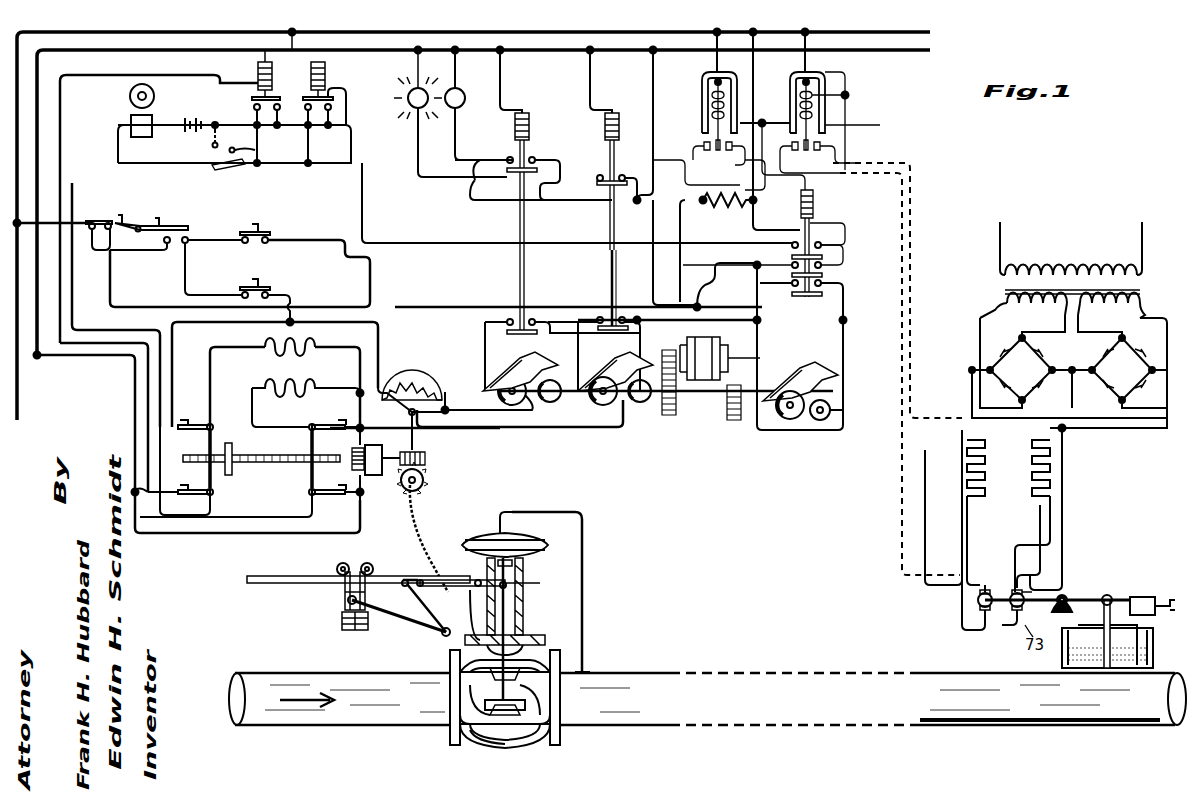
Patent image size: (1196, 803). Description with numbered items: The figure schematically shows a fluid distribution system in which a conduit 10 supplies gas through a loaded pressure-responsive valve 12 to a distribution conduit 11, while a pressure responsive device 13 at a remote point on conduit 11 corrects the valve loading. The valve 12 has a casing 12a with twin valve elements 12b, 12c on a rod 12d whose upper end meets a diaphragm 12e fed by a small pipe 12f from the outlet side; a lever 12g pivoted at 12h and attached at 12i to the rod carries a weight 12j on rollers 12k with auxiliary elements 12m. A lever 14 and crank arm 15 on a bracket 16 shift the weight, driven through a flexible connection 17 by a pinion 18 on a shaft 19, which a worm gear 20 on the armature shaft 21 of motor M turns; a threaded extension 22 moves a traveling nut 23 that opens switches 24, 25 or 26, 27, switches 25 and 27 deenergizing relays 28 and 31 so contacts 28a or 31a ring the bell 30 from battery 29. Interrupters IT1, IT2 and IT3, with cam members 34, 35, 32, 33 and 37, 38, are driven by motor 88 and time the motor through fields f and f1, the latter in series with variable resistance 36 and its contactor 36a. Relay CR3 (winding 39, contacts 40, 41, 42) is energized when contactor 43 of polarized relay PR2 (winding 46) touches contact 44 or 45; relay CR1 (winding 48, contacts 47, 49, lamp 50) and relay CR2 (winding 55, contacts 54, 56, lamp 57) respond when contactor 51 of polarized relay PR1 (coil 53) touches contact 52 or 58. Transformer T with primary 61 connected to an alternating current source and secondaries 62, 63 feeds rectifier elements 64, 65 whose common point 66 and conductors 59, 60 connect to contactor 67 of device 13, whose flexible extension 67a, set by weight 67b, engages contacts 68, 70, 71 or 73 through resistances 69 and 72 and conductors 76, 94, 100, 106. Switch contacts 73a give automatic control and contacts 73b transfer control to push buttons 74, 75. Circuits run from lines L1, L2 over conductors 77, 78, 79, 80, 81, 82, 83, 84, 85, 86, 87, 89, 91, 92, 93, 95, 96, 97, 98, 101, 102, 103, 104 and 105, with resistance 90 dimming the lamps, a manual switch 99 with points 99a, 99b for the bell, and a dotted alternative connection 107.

The conduit 10 is at (258, 668).
The distribution conduit 11 is at (620, 668).
The loaded pressure-responsive valve mechanism 12 is at (545, 640).
The casing 12a is at (530, 750).
The valve element 12b is at (486, 695).
The valve element 12c is at (538, 693).
The rod 12d is at (525, 608).
The diaphragm 12e is at (488, 535).
The small pipe 12f is at (584, 560).
The lever 12g is at (290, 572).
The pivot 12h is at (475, 618).
The pivotal attachment 12i is at (515, 578).
The weight 12j is at (332, 598).
The rollers 12k is at (373, 552).
The auxiliary elements 12m is at (340, 620).
The pressure responsive device 13 is at (1155, 645).
The lever 14 is at (387, 608).
The lever or crank arm 15 is at (427, 603).
The bracket 16 is at (413, 572).
The flexible connection 17 is at (425, 520).
The pinion 18 is at (430, 488).
The shaft 19 is at (420, 440).
The worm gear 20 is at (428, 460).
The armature shaft 21 is at (385, 448).
The threaded extension 22 is at (267, 443).
The traveling nut 23 is at (235, 448).
The switch 24 is at (330, 420).
The switch 25 is at (325, 500).
The switch 26 is at (193, 420).
The switch 27 is at (195, 485).
The relay 28 is at (256, 72).
The contacts 28a is at (250, 102).
The battery 29 is at (200, 112).
The electric bell-ringer 30 is at (150, 92).
The relay 31 is at (328, 72).
The contacts 31a is at (336, 105).
The adjustable cam member 32 is at (645, 408).
The adjustable cam member 33 is at (600, 410).
The adjustable cam member 34 is at (553, 405).
The adjustable cam member 35 is at (475, 396).
The variable resistance 36 is at (430, 372).
The short-circuiting contactor 36a is at (392, 405).
The cam member 37 is at (846, 410).
The cam member 38 is at (790, 420).
The operating winding 39 is at (769, 197).
The contacts 40 is at (822, 290).
The contacts 41 is at (822, 270).
The contacts 42 is at (822, 250).
The contactor 43 is at (845, 128).
The contact 44 is at (840, 150).
The contact 45 is at (770, 118).
The operating winding 46 is at (847, 98).
The contacts 47 is at (549, 324).
The operating winding 48 is at (530, 120).
The contacts 49 is at (503, 170).
The signal lamp 50 is at (462, 90).
The contactor 51 is at (738, 170).
The left hand contact 52 is at (700, 148).
The operating coil 53 is at (710, 110).
The contacts 54 is at (603, 310).
The operating winding 55 is at (620, 120).
The contacts 56 is at (600, 170).
The signal lamp 57 is at (408, 115).
The right hand contact 58 is at (745, 182).
The conductor 59 is at (1078, 418).
The conductor 60 is at (905, 310).
The primary winding 61 is at (1075, 262).
The secondary winding 62 is at (1148, 308).
The secondary winding 63 is at (1000, 305).
The rectifier element 64 is at (1156, 325).
The rectifier element 65 is at (990, 355).
The common point 66 is at (1075, 365).
The movable contactor 67 is at (1068, 595).
The flexible extension 67a is at (1002, 625).
The weight 67b is at (1147, 595).
The contact 68 is at (975, 595).
The resistance 69 is at (1028, 475).
The contact 70 is at (1032, 592).
The contact 71 is at (975, 632).
The resistance 72 is at (988, 462).
The contact 73 is at (140, 215).
The contacts 73a is at (96, 218).
The contacts 73b is at (190, 234).
The push button switch 74 is at (272, 234).
The push button switch 75 is at (272, 290).
The conductor 76 is at (1140, 432).
The conductor 77 is at (707, 42).
The conductor 78 is at (672, 182).
The conductor 79 is at (48, 216).
The conductor 80 is at (112, 278).
The conductor 81 is at (846, 360).
The conductor 82 is at (762, 350).
The conductor 83 is at (734, 342).
The conductor 84 is at (580, 352).
The conductor 85 is at (582, 430).
The conductor 86 is at (348, 394).
The conductor 87 is at (150, 540).
The electric motor 88 is at (745, 370).
The conductor 89 is at (767, 90).
The resistance 90 is at (740, 225).
The conductor 91 is at (660, 222).
The conductor 92 is at (645, 185).
The conductor 93 is at (445, 182).
The conductor 94 is at (1064, 480).
The conductor 95 is at (812, 40).
The conductor 96 is at (837, 183).
The conductor 97 is at (848, 230).
The conductor 98 is at (682, 225).
The manually operated switch 99 is at (212, 166).
The point 99a is at (265, 145).
The point 99b is at (215, 143).
The conductor 100 is at (972, 528).
The conductor 101 is at (695, 152).
The conductor 102 is at (552, 310).
The conductor 103 is at (500, 418).
The conductor 104 is at (380, 340).
The conductor 105 is at (565, 205).
The conductor 106 is at (960, 520).
The dotted line connection 107 is at (750, 278).
The relay CR1 is at (510, 155).
The relay CR2 is at (600, 153).
The relay CR3 is at (818, 210).
The polarized relay PR1 is at (700, 92).
The polarized relay PR2 is at (825, 80).
The interrupter IT1 is at (520, 360).
The interrupter IT2 is at (632, 345).
The interrupter IT3 is at (805, 365).
The line L1 is at (930, 32).
The line L2 is at (930, 50).
The motor M is at (373, 478).
The transformer T is at (1142, 287).
The field f is at (290, 400).
The field f1 is at (315, 352).